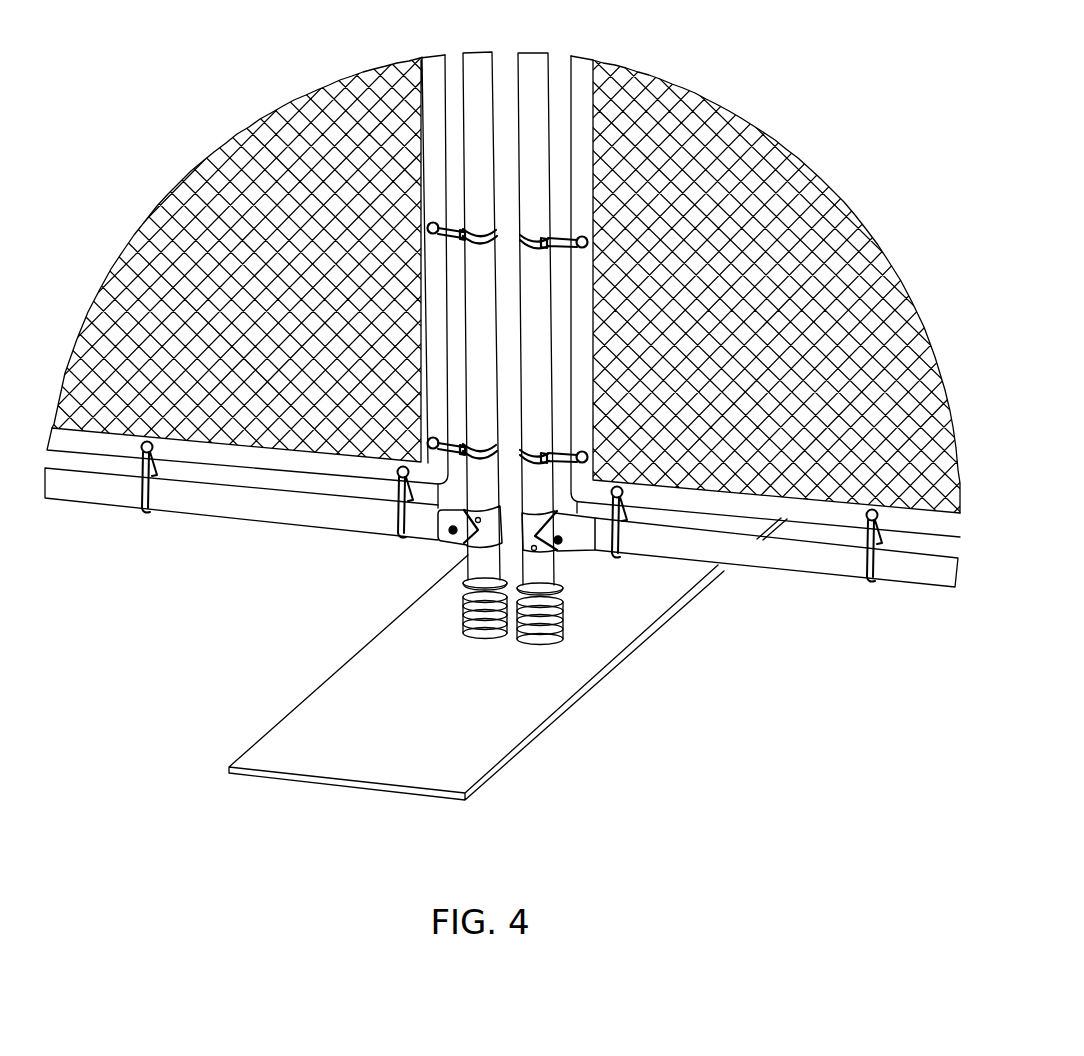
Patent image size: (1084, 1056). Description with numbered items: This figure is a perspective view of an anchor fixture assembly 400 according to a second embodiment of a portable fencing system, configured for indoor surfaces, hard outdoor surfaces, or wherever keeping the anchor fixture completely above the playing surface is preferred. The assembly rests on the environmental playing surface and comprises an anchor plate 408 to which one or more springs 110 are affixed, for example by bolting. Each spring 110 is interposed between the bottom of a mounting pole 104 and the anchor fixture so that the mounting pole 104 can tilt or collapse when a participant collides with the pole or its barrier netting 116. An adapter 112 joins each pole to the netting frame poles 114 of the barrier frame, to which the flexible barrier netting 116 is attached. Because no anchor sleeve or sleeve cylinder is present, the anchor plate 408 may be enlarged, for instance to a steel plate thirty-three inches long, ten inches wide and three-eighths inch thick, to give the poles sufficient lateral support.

The anchor fixture assembly 400 is at (211, 109).
The mounting pole 104 is at (533, 90).
The barrier netting 116 is at (352, 112).
The netting frame poles 114 is at (238, 516).
The adapter 112 is at (463, 582).
The spring 110 is at (462, 618).
The anchor plate 408 is at (515, 755).